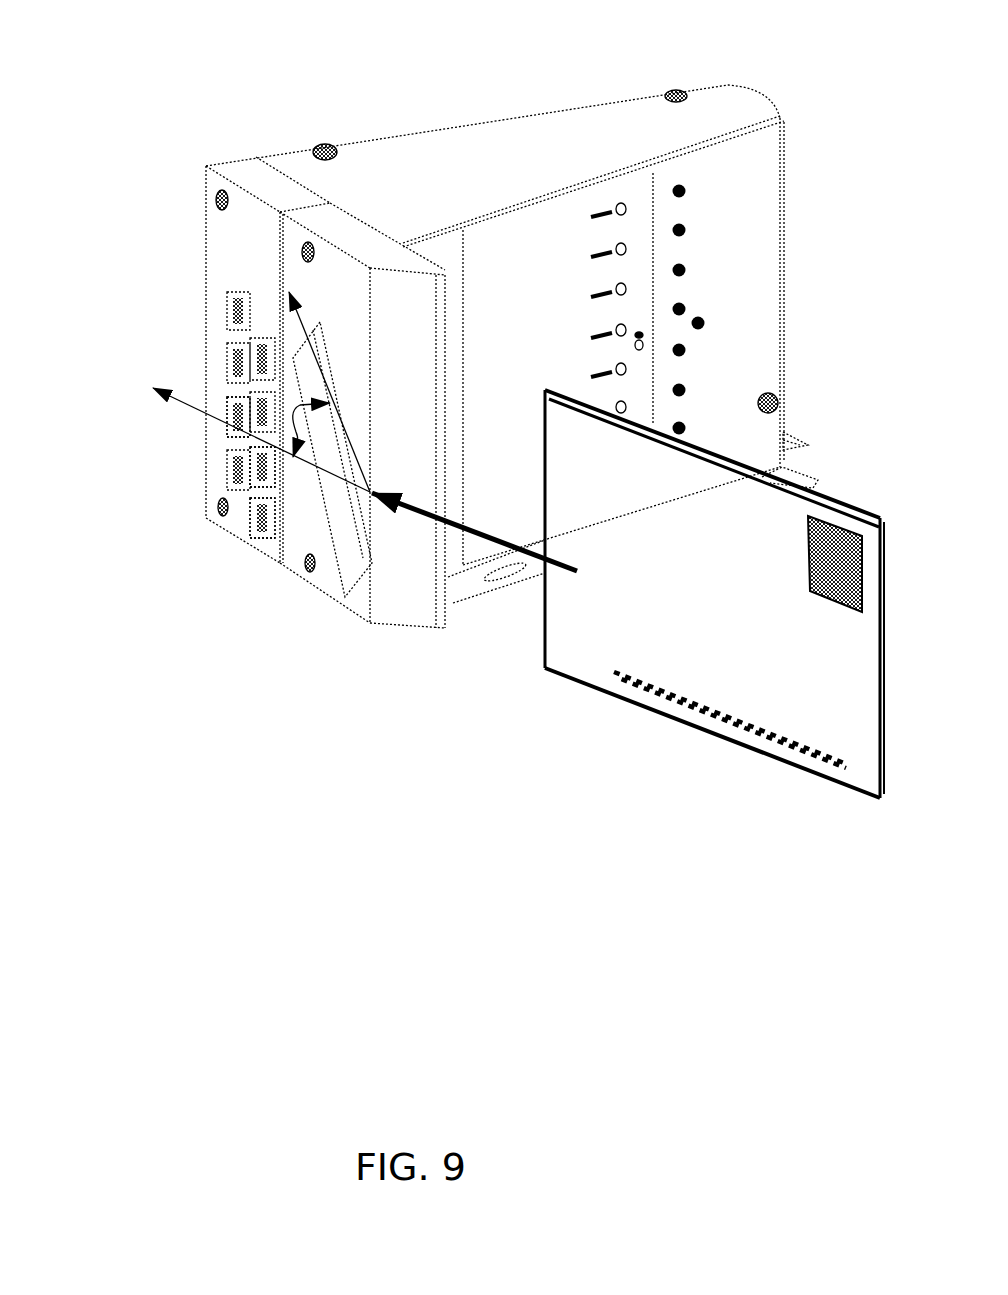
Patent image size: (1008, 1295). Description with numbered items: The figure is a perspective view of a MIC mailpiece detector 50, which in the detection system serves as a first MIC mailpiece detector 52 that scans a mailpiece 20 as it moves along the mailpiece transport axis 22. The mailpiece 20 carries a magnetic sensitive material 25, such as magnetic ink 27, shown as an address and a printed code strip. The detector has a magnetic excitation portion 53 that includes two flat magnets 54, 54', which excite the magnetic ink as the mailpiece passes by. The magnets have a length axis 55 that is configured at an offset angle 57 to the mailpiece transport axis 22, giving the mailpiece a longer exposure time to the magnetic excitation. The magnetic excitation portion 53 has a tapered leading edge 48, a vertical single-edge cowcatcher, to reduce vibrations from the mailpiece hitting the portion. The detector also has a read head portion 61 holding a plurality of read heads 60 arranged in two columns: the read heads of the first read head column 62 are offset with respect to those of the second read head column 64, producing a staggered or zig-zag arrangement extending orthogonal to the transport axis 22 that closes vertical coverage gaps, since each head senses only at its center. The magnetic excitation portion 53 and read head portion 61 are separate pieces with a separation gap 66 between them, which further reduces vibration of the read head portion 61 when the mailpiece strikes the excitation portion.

The mailpiece 20 is at (812, 486).
The mailpiece transport axis 22 is at (475, 530).
The magnetic sensitive material 25 is at (630, 682).
The magnetic ink 27 is at (688, 705).
The tapered leading edge 48 is at (438, 593).
The MIC mailpiece detector 50 is at (227, 160).
The first MIC mailpiece detector 52 is at (512, 172).
The magnetic excitation portion 53 is at (360, 257).
The magnet 54 is at (332, 529).
The magnet 54' is at (368, 444).
The length axis 55 is at (293, 358).
The offset angle 57 is at (298, 405).
The read heads 60 is at (237, 312).
The read head portion 61 is at (250, 180).
The first read head column 62 is at (237, 455).
The second read head column 64 is at (260, 527).
The separation gap 66 is at (300, 203).